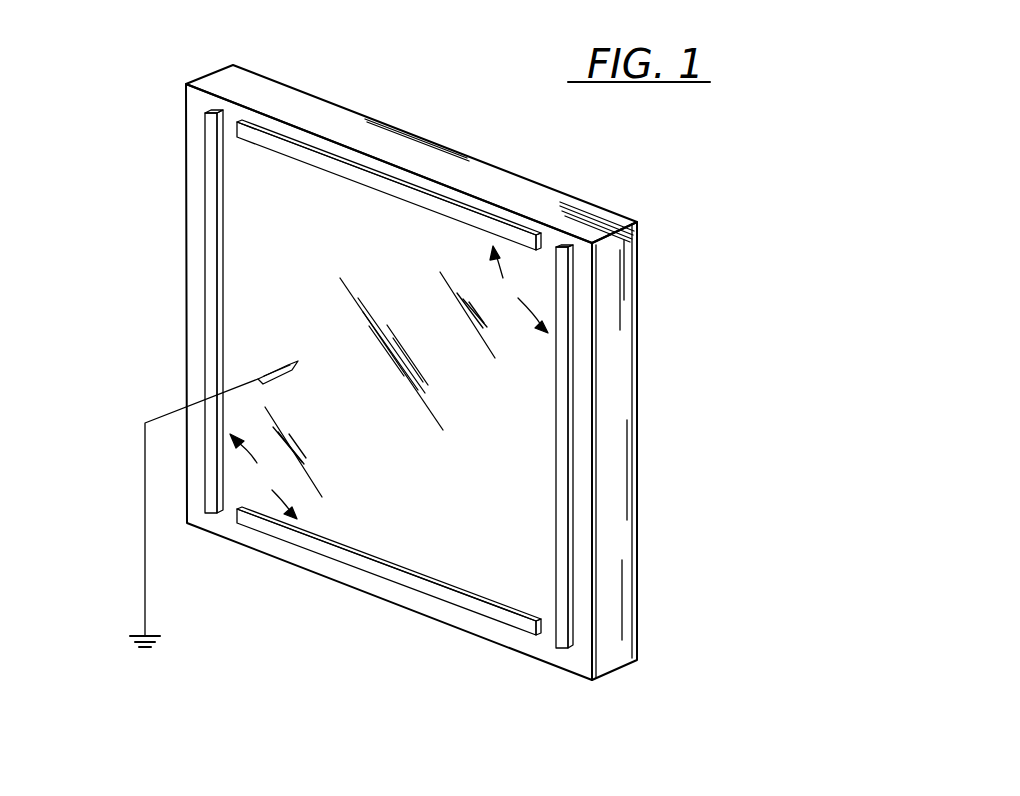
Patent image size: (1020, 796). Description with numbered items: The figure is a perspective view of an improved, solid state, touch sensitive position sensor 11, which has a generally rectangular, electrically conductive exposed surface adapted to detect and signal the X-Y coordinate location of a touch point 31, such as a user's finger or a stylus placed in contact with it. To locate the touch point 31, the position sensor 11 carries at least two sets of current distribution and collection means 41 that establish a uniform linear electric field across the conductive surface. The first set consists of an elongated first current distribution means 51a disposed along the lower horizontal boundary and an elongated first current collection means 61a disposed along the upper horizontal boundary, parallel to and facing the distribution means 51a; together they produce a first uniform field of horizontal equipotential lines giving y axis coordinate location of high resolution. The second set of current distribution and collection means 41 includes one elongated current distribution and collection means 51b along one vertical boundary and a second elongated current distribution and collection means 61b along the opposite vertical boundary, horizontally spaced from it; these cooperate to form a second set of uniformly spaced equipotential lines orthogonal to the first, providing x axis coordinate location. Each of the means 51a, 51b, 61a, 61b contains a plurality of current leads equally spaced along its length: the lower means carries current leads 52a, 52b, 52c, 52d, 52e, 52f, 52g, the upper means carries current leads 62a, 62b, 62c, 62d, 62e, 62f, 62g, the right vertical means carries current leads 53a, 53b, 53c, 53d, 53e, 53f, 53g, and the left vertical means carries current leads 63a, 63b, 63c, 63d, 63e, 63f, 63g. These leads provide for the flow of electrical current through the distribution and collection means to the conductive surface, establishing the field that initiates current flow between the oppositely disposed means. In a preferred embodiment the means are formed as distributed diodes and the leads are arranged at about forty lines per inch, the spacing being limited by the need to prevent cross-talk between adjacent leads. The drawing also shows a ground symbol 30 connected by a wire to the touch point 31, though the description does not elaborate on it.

The position sensor 11 is at (690, 270).
The ground connection 30 is at (143, 571).
The touch point 31 is at (290, 376).
The current distribution and collection means 41 is at (389, 382).
The first current distribution means 51a is at (370, 565).
The current distribution and collection means 51b is at (560, 444).
The first current collection means 61a is at (443, 212).
The current distribution and collection means 61b is at (219, 318).
The current lead 52a is at (255, 523).
The current lead 52b is at (300, 540).
The current lead 52c is at (348, 558).
The current lead 52d is at (390, 573).
The current lead 52e is at (433, 590).
The current lead 52f is at (478, 606).
The current lead 52g is at (517, 621).
The current lead 53a is at (563, 620).
The current lead 53b is at (563, 570).
The current lead 53c is at (563, 520).
The current lead 53d is at (563, 470).
The current lead 53e is at (563, 418).
The current lead 53f is at (563, 365).
The current lead 53g is at (563, 312).
The current lead 62a is at (253, 136).
The current lead 62b is at (298, 153).
The current lead 62c is at (344, 170).
The current lead 62d is at (387, 186).
The current lead 62e is at (430, 202).
The current lead 62f is at (475, 219).
The current lead 62g is at (513, 233).
The current lead 63a is at (210, 475).
The current lead 63b is at (210, 425).
The current lead 63c is at (210, 378).
The current lead 63d is at (210, 331).
The current lead 63e is at (210, 282).
The current lead 63f is at (210, 228).
The current lead 63g is at (210, 172).